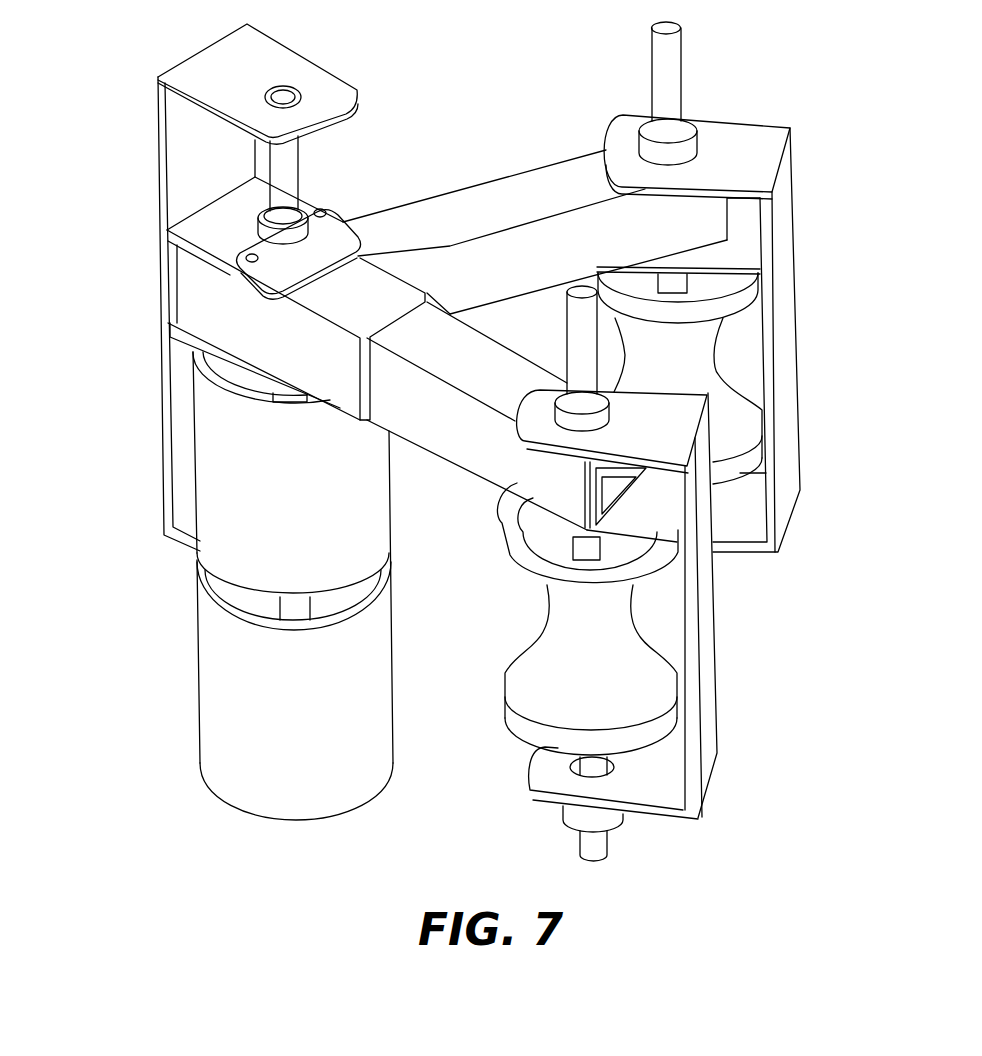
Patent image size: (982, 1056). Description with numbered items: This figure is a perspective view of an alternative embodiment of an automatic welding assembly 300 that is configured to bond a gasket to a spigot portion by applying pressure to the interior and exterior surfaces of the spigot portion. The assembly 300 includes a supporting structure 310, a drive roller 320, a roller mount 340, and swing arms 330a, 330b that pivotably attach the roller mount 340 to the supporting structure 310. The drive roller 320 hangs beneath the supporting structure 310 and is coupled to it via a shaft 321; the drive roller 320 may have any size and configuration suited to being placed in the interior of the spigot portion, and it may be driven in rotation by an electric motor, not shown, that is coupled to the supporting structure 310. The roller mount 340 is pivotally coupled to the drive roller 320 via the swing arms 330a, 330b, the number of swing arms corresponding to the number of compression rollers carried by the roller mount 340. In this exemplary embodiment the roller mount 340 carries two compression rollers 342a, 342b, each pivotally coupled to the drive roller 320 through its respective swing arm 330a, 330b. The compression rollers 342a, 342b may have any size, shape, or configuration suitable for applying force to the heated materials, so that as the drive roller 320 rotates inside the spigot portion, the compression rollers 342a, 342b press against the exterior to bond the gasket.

The assembly 300 is at (117, 128).
The supporting structure 310 is at (268, 55).
The drive roller 320 is at (218, 723).
The shaft 321 is at (290, 182).
The swing arm 330a is at (458, 200).
The swing arm 330b is at (447, 437).
The roller mount 340 is at (789, 128).
The compression roller 342a is at (717, 384).
The compression roller 342b is at (523, 663).